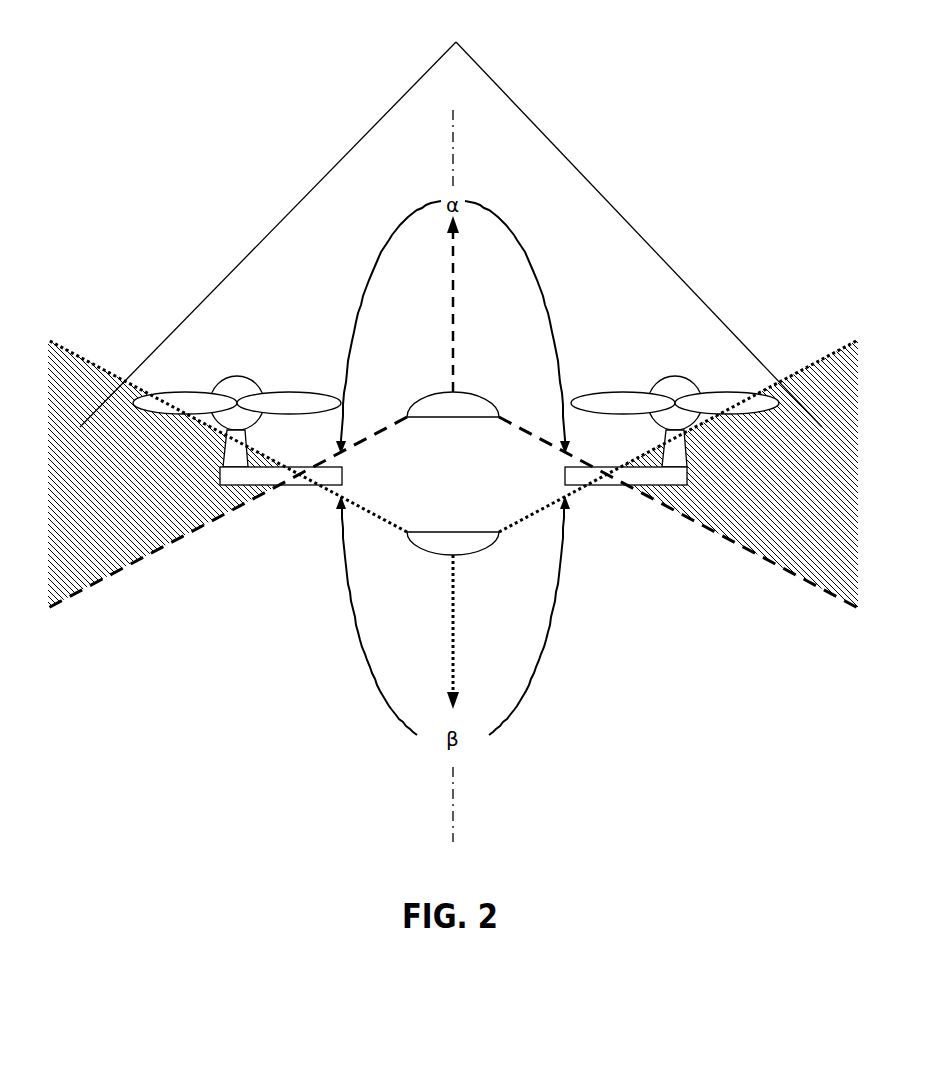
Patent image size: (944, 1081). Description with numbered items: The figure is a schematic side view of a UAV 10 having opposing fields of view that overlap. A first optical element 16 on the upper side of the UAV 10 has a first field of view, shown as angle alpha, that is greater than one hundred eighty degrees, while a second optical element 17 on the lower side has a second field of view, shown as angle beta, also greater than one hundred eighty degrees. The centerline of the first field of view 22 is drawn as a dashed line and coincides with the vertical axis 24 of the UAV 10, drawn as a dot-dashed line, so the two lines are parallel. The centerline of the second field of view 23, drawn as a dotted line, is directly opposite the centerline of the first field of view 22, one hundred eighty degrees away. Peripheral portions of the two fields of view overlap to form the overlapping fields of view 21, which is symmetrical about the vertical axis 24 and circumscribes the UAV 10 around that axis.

The UAV 10 is at (672, 615).
The first optical element 16 is at (482, 405).
The second optical element 17 is at (482, 545).
The overlapping fields of view 21 is at (451, 219).
The centerline of the first field of view 22 is at (458, 352).
The centerline of the second field of view 23 is at (458, 617).
The vertical axis 24 is at (458, 802).